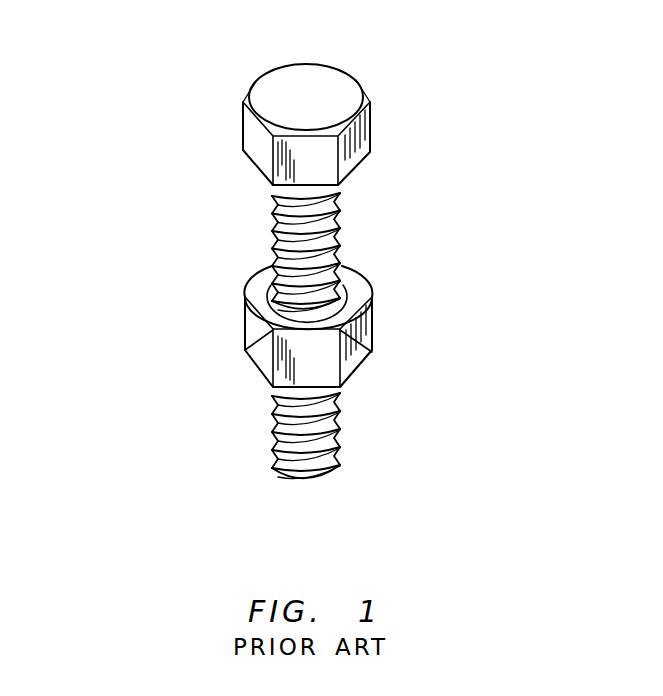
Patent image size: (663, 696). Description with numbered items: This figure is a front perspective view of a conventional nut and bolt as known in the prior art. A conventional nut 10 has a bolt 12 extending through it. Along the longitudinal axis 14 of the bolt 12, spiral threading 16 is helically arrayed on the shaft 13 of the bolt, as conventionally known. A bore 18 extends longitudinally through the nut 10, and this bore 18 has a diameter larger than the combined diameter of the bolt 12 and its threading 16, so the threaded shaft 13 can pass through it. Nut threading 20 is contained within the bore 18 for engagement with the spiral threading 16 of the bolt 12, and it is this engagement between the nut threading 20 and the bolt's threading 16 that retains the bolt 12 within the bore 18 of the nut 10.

The nut 10 is at (245, 320).
The bolt 12 is at (367, 128).
The shaft 13 is at (342, 203).
The longitudinal axis 14 is at (309, 58).
The spiral threading 16 is at (342, 248).
The bore 18 is at (340, 330).
The nut threading 20 is at (273, 330).